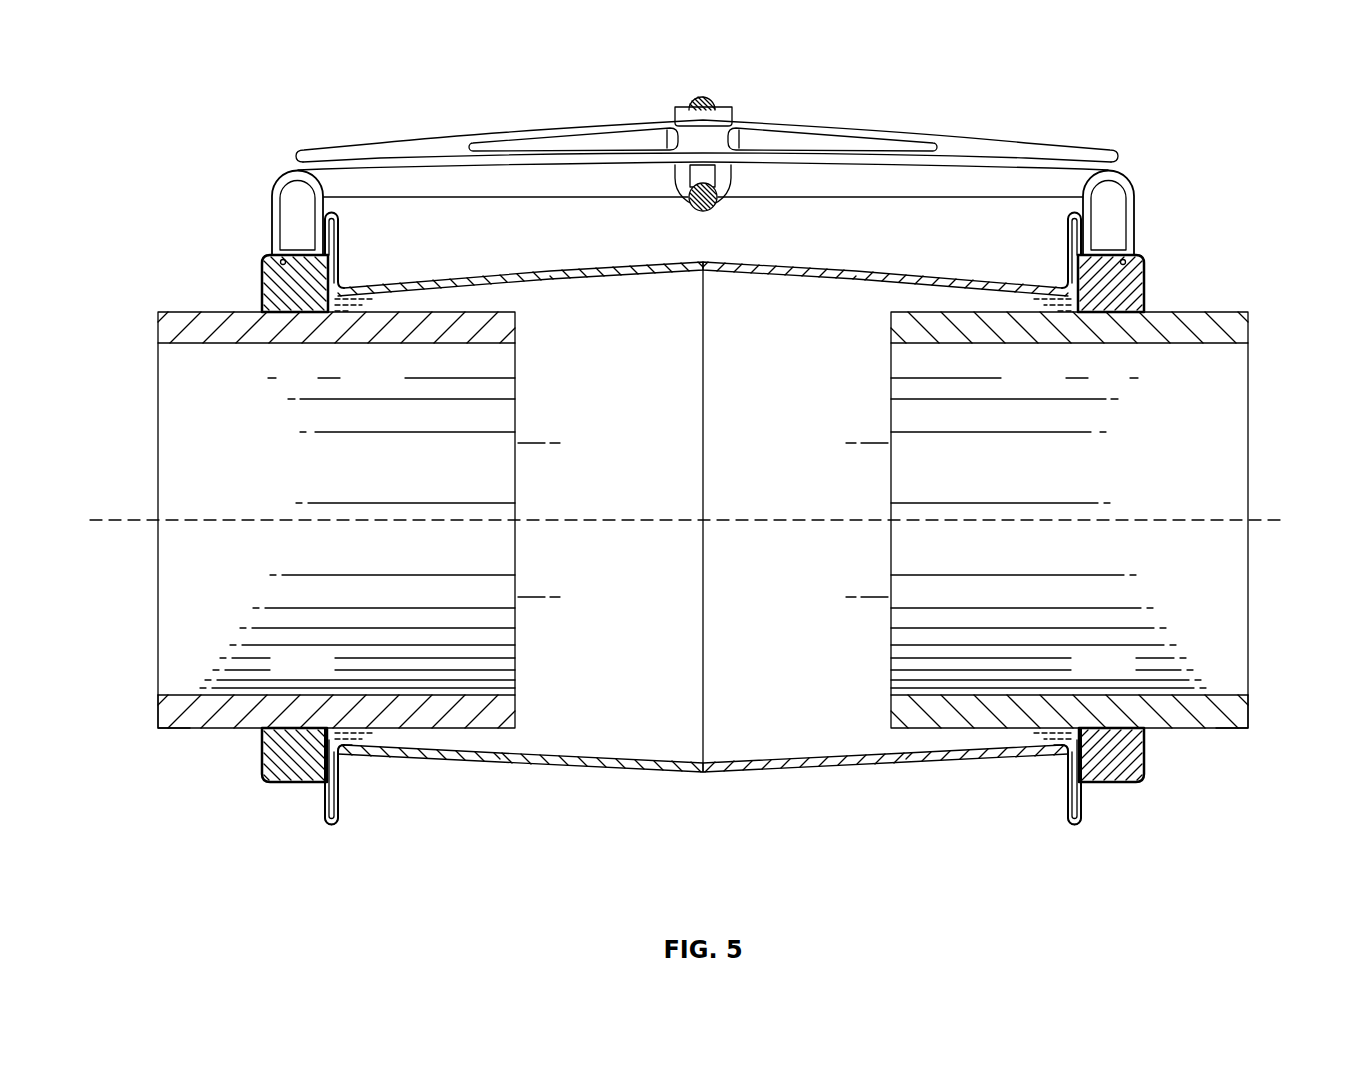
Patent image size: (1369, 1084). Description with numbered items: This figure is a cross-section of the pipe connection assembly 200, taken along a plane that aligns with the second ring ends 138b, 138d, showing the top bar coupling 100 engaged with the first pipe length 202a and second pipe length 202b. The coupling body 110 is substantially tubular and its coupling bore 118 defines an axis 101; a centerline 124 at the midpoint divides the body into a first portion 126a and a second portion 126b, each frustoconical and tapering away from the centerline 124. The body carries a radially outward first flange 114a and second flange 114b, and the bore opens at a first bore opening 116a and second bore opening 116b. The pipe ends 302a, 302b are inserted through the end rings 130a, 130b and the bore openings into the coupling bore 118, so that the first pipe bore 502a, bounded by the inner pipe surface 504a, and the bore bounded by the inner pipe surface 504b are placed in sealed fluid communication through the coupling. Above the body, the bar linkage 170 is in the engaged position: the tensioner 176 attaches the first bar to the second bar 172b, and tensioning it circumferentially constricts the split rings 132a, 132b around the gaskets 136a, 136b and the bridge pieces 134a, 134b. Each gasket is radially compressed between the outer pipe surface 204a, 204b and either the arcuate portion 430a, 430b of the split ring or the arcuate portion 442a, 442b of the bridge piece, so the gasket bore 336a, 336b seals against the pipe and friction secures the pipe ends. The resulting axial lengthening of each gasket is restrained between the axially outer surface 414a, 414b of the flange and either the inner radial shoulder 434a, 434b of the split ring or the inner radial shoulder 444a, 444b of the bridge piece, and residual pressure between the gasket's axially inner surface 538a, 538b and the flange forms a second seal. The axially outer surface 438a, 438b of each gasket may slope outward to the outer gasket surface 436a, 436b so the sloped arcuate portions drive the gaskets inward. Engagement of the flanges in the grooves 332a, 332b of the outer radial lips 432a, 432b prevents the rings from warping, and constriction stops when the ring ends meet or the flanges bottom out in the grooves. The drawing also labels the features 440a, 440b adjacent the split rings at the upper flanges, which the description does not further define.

The pipe connection assembly 200 is at (204, 77).
The top bar coupling 100 is at (633, 95).
The axis 101 is at (1280, 520).
The coupling body 110 is at (703, 776).
The first flange 114a is at (340, 272).
The second flange 114b is at (1068, 270).
The first bore opening 116a is at (312, 318).
The second bore opening 116b is at (1094, 318).
The coupling bore 118 is at (612, 690).
The centerline 124 is at (707, 635).
The first portion 126a is at (607, 748).
The second portion 126b is at (813, 748).
The first end ring 130a is at (265, 785).
The second end ring 130b is at (1145, 785).
The first split ring 132a is at (262, 302).
The second split ring 132b is at (1148, 302).
The first bridge piece 134a is at (268, 256).
The second bridge piece 134b is at (1142, 256).
The first gasket 136a is at (280, 318).
The second gasket 136b is at (1126, 318).
The second ring end 138b is at (292, 245).
The second ring end 138d is at (1115, 246).
The bar linkage 170 is at (958, 142).
The second bar 172b is at (830, 145).
The tensioner 176 is at (712, 100).
The first pipe length 202a is at (175, 670).
The second pipe length 202b is at (1232, 678).
The first outer pipe surface 204a is at (164, 734).
The second outer pipe surface 204b is at (1242, 734).
The first pipe end 302a is at (517, 405).
The pipe end 302b is at (890, 378).
The groove 332a is at (338, 826).
The groove 332b is at (1068, 825).
The gasket bore 336a is at (290, 733).
The gasket bore 336b is at (1120, 733).
The axially outer surface 414a is at (310, 788).
The axially outer surface 414b is at (1100, 788).
The arcuate portion 430a is at (292, 790).
The arcuate portion 430b is at (1115, 790).
The outer radial lip 432a is at (340, 810).
The outer radial lip 432b is at (1066, 810).
The inner radial shoulder 434a is at (266, 775).
The inner radial shoulder 434b is at (1142, 775).
The outer gasket surface 436a is at (322, 800).
The outer gasket surface 436b is at (1118, 800).
The axially outer surface 438a is at (261, 749).
The axially outer surface 438b is at (1147, 749).
The inner band hook 440a is at (340, 226).
The inner band hook 440b is at (1068, 226).
The arcuate portion 442a is at (280, 248).
The arcuate portion 442b is at (1122, 250).
The inner radial shoulder 444a is at (263, 280).
The inner radial shoulder 444b is at (1145, 280).
The first pipe bore 502a is at (175, 447).
The inner pipe surface 504a is at (168, 348).
The inner pipe surface 504b is at (1238, 348).
The axially inner surface 538a is at (338, 766).
The axially inner surface 538b is at (1067, 762).